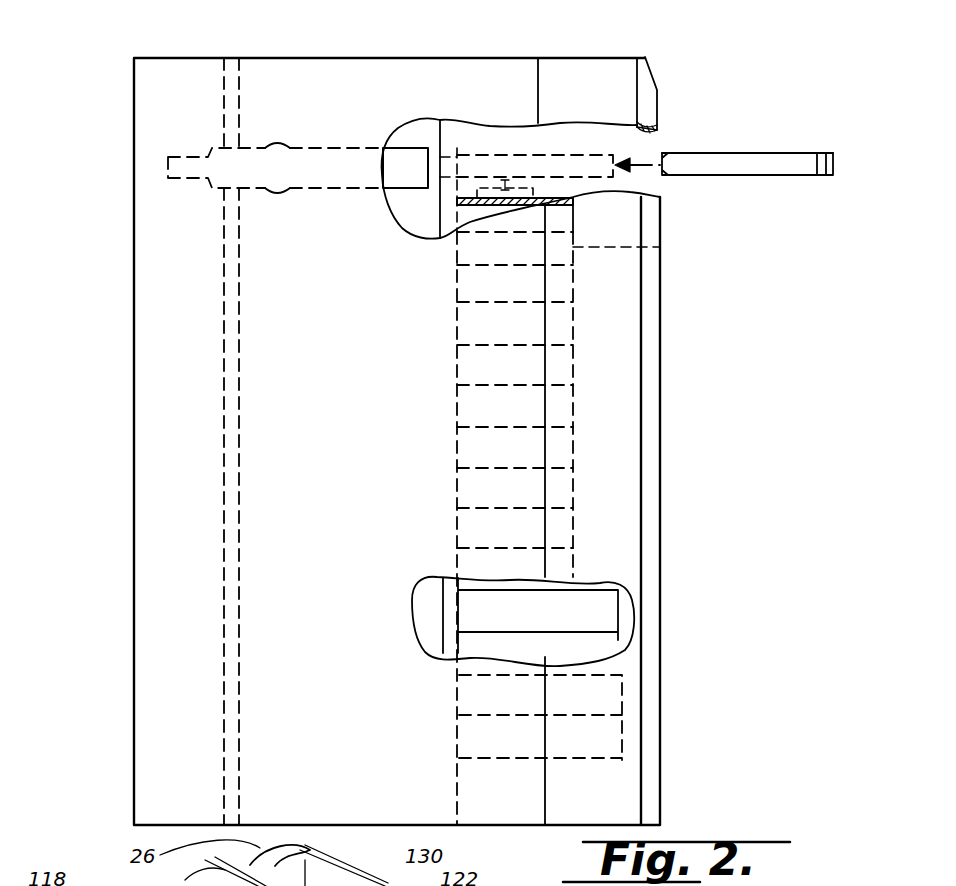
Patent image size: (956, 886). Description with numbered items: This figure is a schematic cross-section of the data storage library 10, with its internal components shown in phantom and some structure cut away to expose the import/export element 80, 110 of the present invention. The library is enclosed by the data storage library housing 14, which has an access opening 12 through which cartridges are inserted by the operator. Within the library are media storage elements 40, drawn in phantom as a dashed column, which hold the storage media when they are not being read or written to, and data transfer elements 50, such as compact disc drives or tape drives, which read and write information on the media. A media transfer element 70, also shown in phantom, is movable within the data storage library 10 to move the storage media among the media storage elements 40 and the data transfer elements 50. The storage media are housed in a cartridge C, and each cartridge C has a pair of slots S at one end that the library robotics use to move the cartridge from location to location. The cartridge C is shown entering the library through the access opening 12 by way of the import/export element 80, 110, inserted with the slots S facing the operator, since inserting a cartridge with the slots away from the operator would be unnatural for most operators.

The storage media library 10 is at (100, 147).
The access opening 12 is at (660, 128).
The data storage library housing 14 is at (622, 57).
The media storage element 40 is at (545, 205).
The data transfer element 50 is at (607, 703).
The media transfer element 70 is at (298, 160).
The import/export element 80 is at (490, 195).
The import/export element 110 is at (516, 113).
The slots S is at (826, 153).
The cartridge C is at (714, 153).